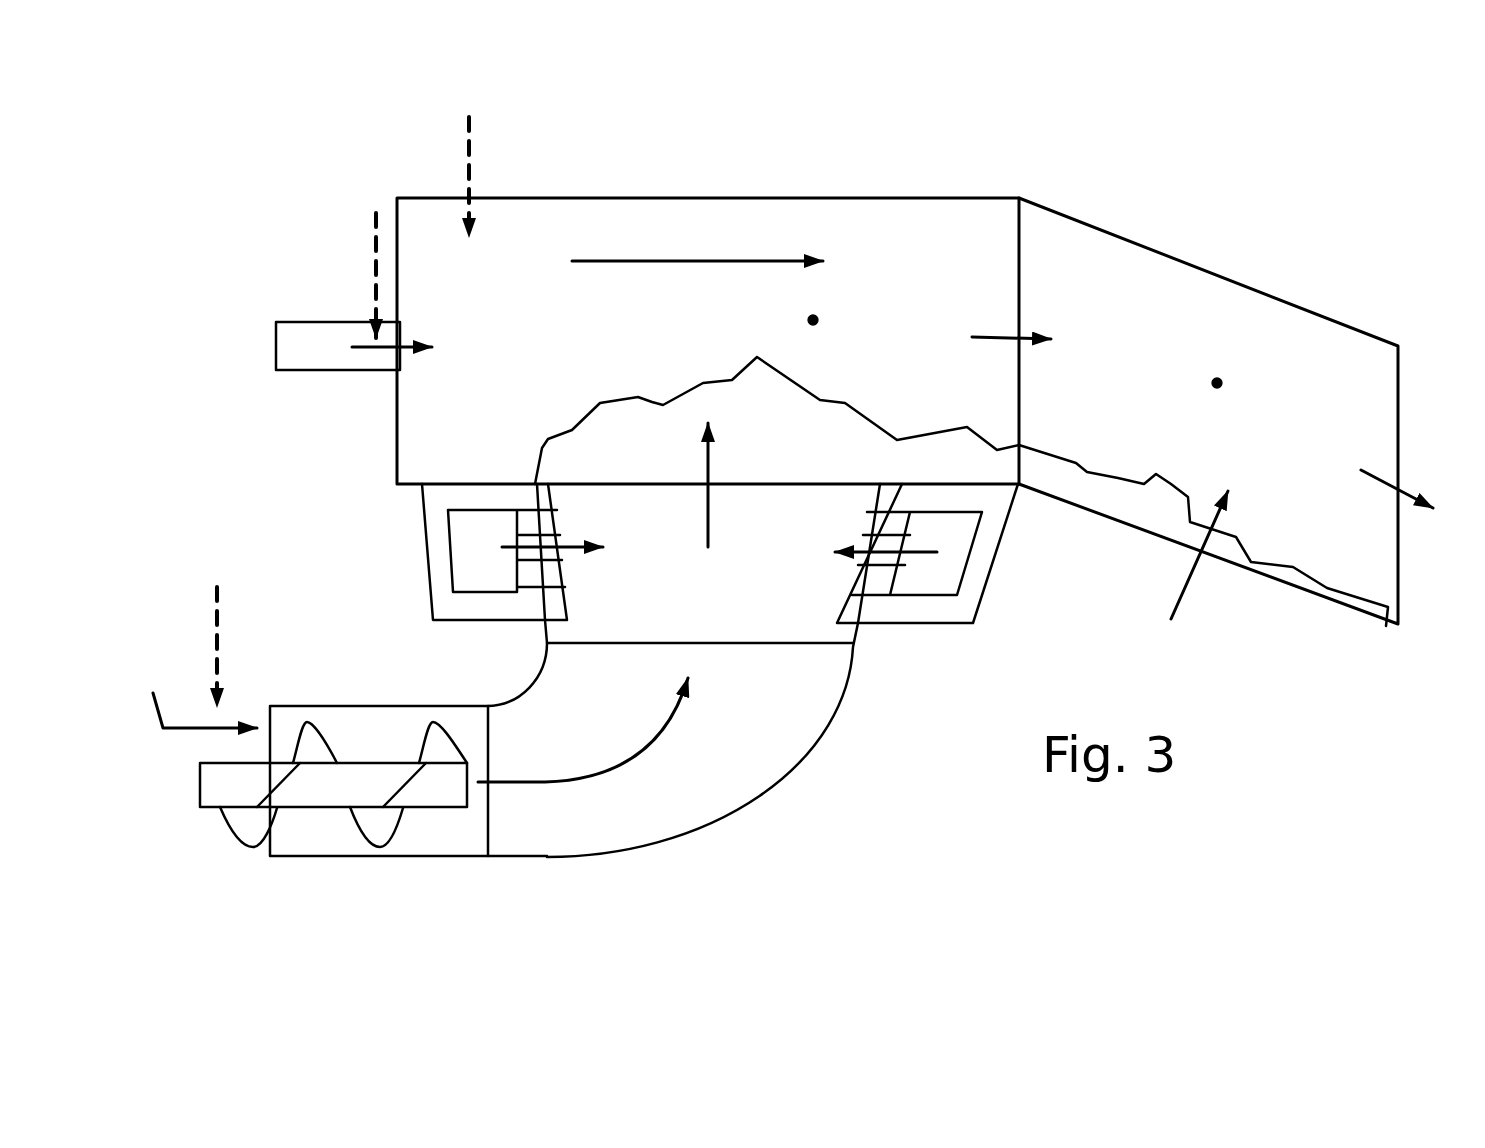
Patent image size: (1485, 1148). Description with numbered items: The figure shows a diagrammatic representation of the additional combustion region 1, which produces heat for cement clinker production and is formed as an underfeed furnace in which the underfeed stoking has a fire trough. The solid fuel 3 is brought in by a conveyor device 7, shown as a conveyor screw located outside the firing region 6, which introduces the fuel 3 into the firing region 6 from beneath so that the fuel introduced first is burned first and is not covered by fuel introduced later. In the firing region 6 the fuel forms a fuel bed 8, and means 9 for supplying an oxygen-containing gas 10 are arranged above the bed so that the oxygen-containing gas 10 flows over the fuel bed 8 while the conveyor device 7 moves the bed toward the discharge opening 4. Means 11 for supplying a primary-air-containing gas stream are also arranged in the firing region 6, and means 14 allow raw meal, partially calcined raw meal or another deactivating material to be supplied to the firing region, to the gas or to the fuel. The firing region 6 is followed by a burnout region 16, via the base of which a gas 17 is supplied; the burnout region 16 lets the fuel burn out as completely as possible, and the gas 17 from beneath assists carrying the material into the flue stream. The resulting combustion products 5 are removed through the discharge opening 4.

The additional combustion region 1 is at (975, 178).
The solid fuel 3 is at (193, 692).
The discharge opening 4 is at (1400, 404).
The combustion products 5 is at (1400, 479).
The firing region 6 is at (813, 320).
The conveyor device 7 is at (218, 788).
The fuel bed 8 is at (652, 412).
The means for supplying oxygen-containing gas 9 is at (293, 371).
The oxygen-containing gas 10 is at (390, 347).
The means for supplying a primary-air-containing gas stream 11 is at (922, 553).
The means for supplying deactivating material 14 is at (343, 412).
The burnout region 16 is at (1217, 383).
The gas 17 is at (1204, 559).